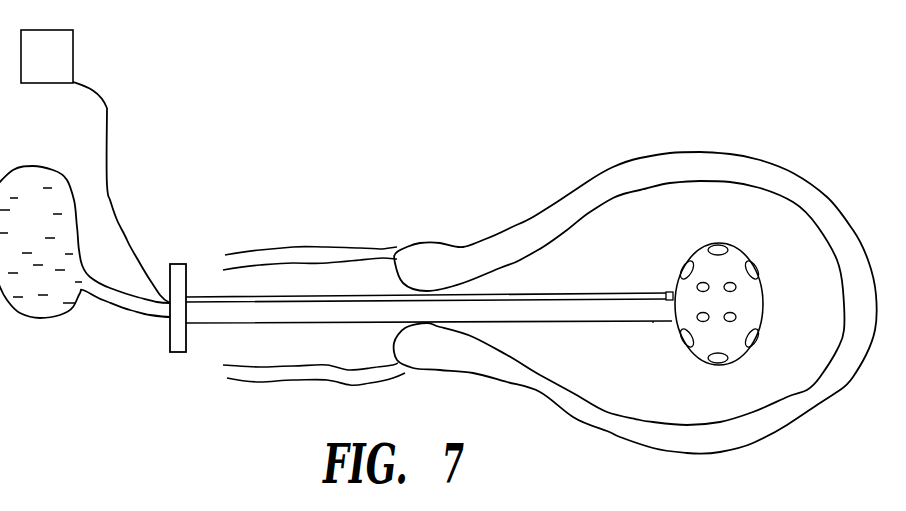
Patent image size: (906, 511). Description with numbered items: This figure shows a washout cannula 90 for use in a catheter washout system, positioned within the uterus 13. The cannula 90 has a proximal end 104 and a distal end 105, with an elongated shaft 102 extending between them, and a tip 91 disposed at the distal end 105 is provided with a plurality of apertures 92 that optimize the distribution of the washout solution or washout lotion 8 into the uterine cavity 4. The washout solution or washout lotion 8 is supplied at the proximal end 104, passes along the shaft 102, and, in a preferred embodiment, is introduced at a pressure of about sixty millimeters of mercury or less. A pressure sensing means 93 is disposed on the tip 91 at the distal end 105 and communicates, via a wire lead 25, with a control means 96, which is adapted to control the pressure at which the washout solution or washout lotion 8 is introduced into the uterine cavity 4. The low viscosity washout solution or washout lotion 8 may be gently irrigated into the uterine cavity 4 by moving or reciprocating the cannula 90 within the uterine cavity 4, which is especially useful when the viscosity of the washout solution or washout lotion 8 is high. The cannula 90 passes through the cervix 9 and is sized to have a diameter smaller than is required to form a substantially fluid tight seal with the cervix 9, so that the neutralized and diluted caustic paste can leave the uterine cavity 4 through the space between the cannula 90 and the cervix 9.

The control means 96 is at (57, 74).
The wire lead 25 is at (108, 145).
The washout solution or washout lotion 8 is at (39, 235).
The proximal end 104 is at (197, 323).
The catheter shaft 102 is at (333, 357).
The distal end 105 is at (653, 323).
The pressure sensing means 93 is at (665, 291).
The tip 91 is at (738, 358).
The apertures 92 is at (731, 280).
The uterus 13 is at (692, 455).
The uterine cavity 4 is at (700, 226).
The cannula 90 is at (366, 279).
The cervix 9 is at (427, 350).